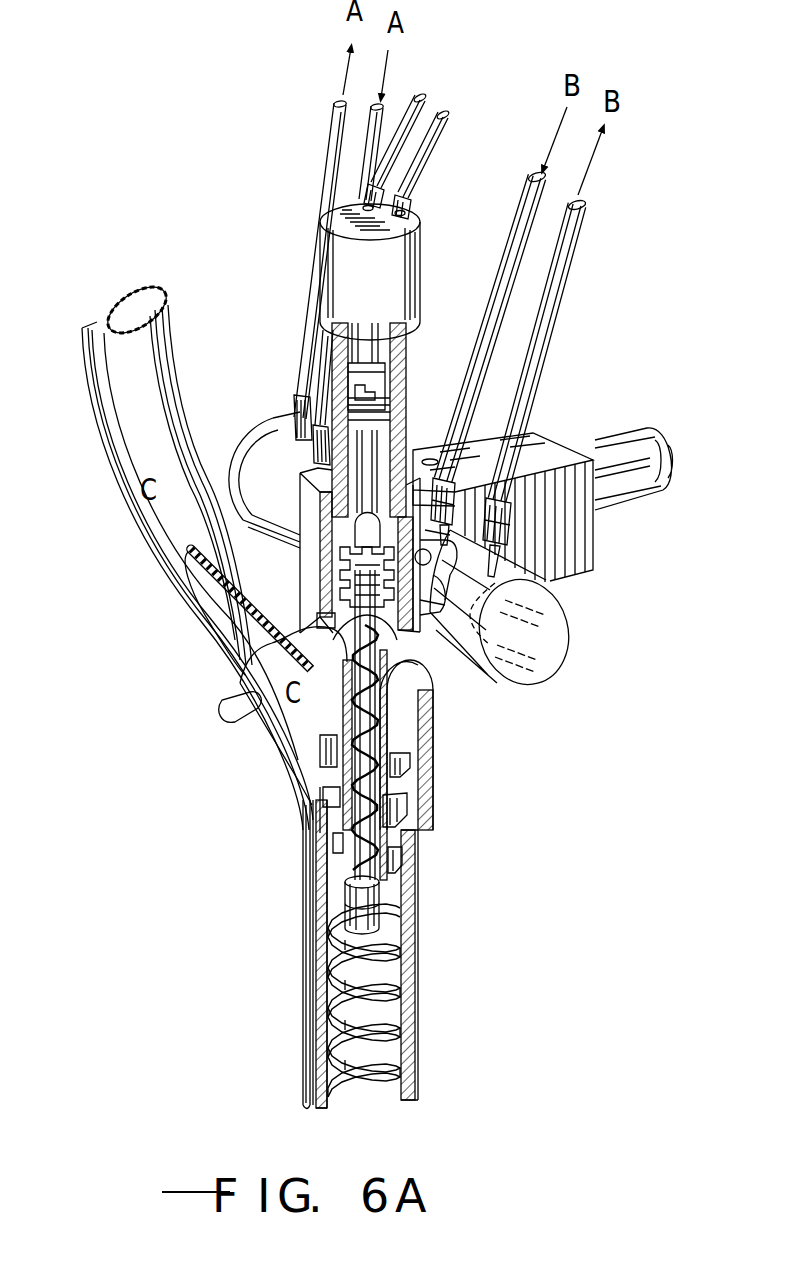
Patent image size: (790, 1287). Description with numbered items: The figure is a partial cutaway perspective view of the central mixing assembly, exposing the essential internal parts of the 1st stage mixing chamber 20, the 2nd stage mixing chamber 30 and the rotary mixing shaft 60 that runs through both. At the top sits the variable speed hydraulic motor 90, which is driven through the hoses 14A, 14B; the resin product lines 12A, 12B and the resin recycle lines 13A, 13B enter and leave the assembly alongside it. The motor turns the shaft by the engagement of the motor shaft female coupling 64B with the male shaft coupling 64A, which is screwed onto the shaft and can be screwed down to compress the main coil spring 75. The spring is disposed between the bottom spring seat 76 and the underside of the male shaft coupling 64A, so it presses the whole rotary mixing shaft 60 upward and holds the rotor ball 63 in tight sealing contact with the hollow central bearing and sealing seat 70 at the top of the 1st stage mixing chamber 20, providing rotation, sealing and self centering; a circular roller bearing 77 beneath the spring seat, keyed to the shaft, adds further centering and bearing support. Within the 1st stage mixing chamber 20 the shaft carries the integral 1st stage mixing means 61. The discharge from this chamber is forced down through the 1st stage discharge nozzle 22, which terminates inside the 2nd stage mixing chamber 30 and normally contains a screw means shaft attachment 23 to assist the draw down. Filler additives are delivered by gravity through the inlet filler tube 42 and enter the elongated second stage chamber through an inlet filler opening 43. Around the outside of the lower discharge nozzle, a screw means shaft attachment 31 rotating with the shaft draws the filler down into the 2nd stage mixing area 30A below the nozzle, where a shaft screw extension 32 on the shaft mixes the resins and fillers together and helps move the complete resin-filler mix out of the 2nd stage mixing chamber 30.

The resin product line 12A is at (363, 162).
The resin recycle line 13A is at (330, 128).
The hose 14A is at (417, 97).
The hose 14B is at (437, 114).
The resin product line 12B is at (530, 203).
The resin recycle line 13B is at (550, 297).
The rotary motor 90 is at (407, 277).
The main coil spring 75 is at (400, 357).
The bottom spring seat 76 is at (393, 400).
The circular roller bearing 77 is at (390, 417).
The male shaft coupling 64A is at (357, 400).
The motor shaft female coupling 64B is at (357, 377).
The bearing and sealing seat 70 is at (353, 507).
The 1st stage mixing chamber 20 is at (310, 530).
The rotor ball 63 is at (343, 570).
The 1st stage mixing means 61 is at (327, 583).
The inlet filler tube 42 is at (147, 527).
The inlet filler opening 43 is at (233, 638).
The rotary mixing shaft 60 is at (363, 690).
The screw means shaft attachment 23 is at (378, 732).
The screw means shaft attachment 31 is at (407, 767).
The 2nd stage mixing chamber 30 is at (433, 793).
The 1st stage discharge nozzle 22 is at (422, 843).
The 2nd stage mixing area 30A is at (393, 893).
The shaft screw extension 32 is at (407, 1003).